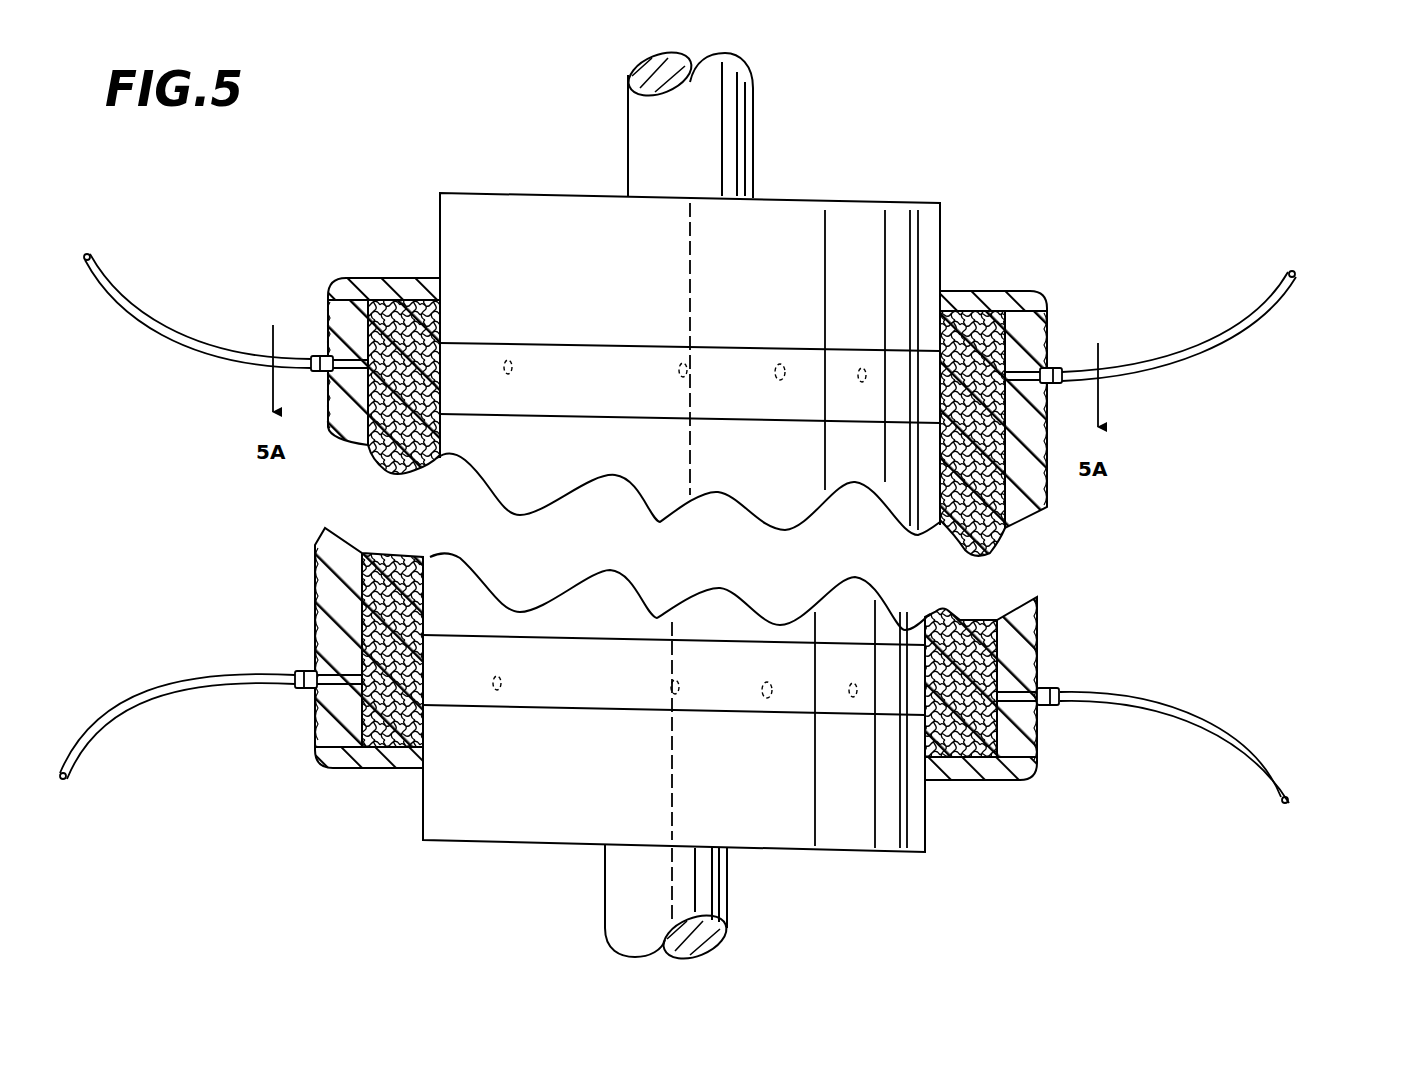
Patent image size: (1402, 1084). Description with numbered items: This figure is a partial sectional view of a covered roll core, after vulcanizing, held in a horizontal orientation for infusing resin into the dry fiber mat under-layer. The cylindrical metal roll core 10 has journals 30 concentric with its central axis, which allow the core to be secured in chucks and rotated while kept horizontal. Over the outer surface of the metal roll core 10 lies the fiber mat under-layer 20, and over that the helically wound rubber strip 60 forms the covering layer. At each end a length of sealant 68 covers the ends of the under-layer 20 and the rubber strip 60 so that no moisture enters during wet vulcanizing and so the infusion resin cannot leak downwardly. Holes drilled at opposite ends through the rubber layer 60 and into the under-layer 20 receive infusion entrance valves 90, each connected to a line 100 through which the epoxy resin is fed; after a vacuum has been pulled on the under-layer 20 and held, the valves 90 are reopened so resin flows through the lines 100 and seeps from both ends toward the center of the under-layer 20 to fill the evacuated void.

The metal roll core 10 is at (780, 232).
The fiber mat under-layer 20 is at (1000, 503).
The journals 30 is at (683, 887).
The rubber strip 60 is at (1022, 435).
The sealant 68 is at (1025, 770).
The infusion entrance valves 90 is at (321, 358).
The line 100 is at (150, 333).